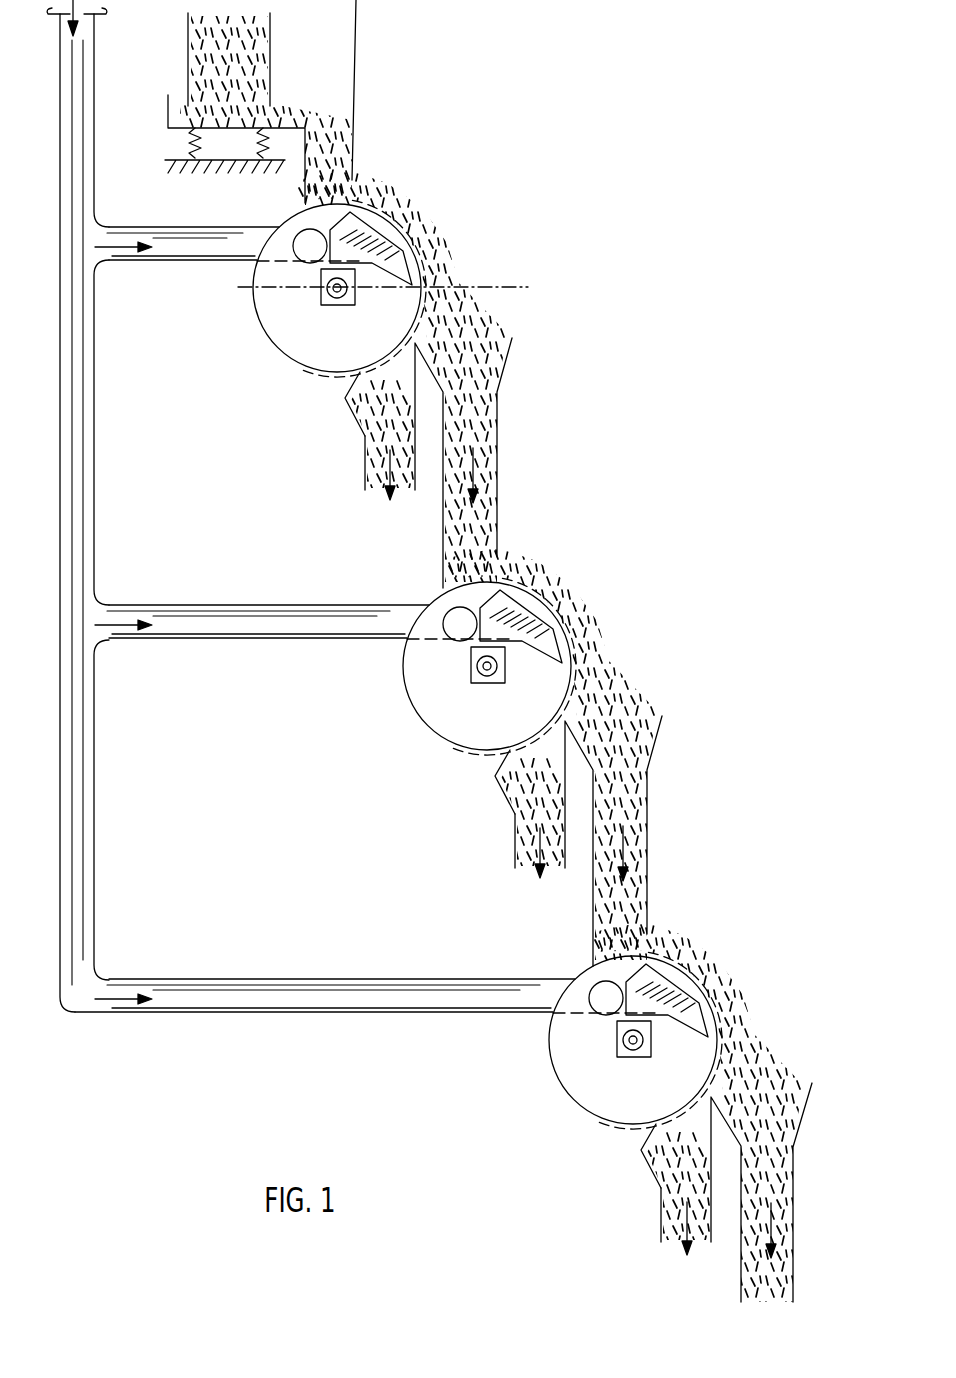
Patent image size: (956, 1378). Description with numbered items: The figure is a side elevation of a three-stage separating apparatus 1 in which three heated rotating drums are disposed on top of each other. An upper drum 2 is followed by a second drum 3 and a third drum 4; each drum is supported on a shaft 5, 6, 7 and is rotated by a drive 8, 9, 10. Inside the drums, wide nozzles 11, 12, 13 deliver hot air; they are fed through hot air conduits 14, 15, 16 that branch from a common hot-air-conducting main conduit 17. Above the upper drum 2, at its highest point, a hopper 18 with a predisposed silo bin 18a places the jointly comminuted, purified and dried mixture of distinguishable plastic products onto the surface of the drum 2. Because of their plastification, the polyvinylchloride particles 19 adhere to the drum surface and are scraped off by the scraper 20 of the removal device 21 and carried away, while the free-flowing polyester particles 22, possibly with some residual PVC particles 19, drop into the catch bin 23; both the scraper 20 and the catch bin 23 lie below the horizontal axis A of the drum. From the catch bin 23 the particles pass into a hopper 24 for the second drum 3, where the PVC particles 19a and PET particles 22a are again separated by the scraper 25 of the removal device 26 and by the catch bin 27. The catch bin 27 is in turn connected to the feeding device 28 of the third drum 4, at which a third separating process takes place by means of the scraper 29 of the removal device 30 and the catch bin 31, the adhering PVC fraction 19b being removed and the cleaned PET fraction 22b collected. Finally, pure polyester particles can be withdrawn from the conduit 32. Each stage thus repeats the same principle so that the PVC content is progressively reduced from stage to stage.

The separating apparatus 1 is at (579, 525).
The drum 2 is at (338, 295).
The drum 3 is at (476, 670).
The drum 4 is at (632, 1044).
The shaft 5 is at (355, 301).
The shaft 6 is at (507, 677).
The shaft 7 is at (654, 1051).
The drive 8 is at (301, 283).
The drive 9 is at (450, 657).
The drive 10 is at (591, 1032).
The wide nozzle 11 is at (402, 243).
The wide nozzle 12 is at (557, 626).
The wide nozzle 13 is at (705, 1000).
The hot air conduit 14 is at (185, 236).
The hot air conduit 15 is at (202, 615).
The hot air conduit 16 is at (195, 975).
The main conduit 17 is at (96, 770).
The hopper 18 is at (352, 128).
The silo bin 18a is at (286, 70).
The polyvinylchloride (PVC) particles 19 is at (402, 372).
The polyvinylchloride (PVC) particles 19a is at (552, 754).
The material stream after third unit 19b is at (698, 1112).
The scraper 20 is at (330, 404).
The removal device 21 is at (330, 463).
The polyester (PET) particles 22 is at (473, 439).
The catch bin 23 is at (534, 447).
The hopper 24 is at (516, 475).
The scraper 25 is at (475, 782).
The removal device 26 is at (480, 841).
The polyester (PET) particles 22a is at (625, 817).
The catch bin 27 is at (685, 825).
The device 28 is at (665, 850).
The scraper 29 is at (624, 1156).
The removal device 30 is at (628, 1215).
The partition wall of third chute 22b is at (769, 1172).
The catch bin 31 is at (824, 1192).
The conduit 32 is at (811, 1226).
The horizontal axis A is at (470, 277).